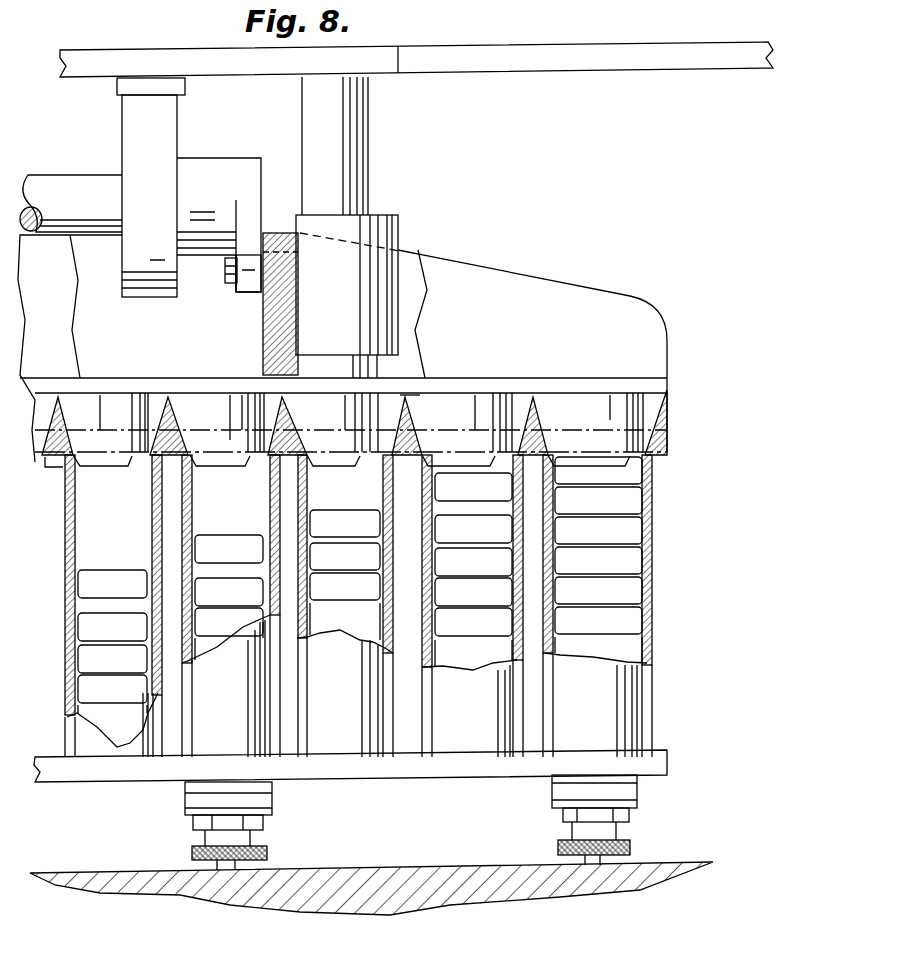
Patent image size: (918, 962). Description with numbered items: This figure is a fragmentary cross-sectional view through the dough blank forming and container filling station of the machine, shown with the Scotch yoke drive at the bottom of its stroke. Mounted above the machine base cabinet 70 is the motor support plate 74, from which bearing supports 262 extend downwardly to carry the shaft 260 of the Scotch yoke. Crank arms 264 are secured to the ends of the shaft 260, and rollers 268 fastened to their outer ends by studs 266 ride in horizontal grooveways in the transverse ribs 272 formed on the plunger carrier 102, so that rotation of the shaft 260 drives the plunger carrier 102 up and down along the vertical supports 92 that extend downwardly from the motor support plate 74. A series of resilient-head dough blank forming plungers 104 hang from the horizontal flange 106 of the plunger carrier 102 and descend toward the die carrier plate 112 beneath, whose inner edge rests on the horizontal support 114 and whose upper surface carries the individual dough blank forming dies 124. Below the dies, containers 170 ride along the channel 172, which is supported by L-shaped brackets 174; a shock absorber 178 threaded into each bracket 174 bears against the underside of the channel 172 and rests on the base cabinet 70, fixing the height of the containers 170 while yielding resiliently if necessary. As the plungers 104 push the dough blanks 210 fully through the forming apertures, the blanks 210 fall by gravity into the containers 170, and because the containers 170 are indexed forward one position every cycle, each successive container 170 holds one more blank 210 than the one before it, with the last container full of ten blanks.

The machine base cabinet 70 is at (396, 901).
The motor support plate 74 is at (548, 66).
The vertical support 92 is at (350, 182).
The plunger carrier 102 is at (130, 352).
The dough blank forming plunger 104 is at (617, 380).
The horizontal flange 106 is at (655, 380).
The die carrier plate 112 is at (665, 435).
The horizontal support 114 is at (667, 452).
The dough blank forming die 124 is at (658, 410).
The container 170 is at (240, 745).
The channel 172 is at (670, 762).
The L-shaped bracket 174 is at (262, 806).
The shock absorber 178 is at (280, 836).
The dough blank 210 is at (130, 597).
The shaft 260 is at (88, 205).
The bearing support 262 is at (158, 142).
The crank arm 264 is at (238, 190).
The stud 266 is at (224, 272).
The roller 268 is at (264, 305).
The transverse rib 272 is at (264, 344).